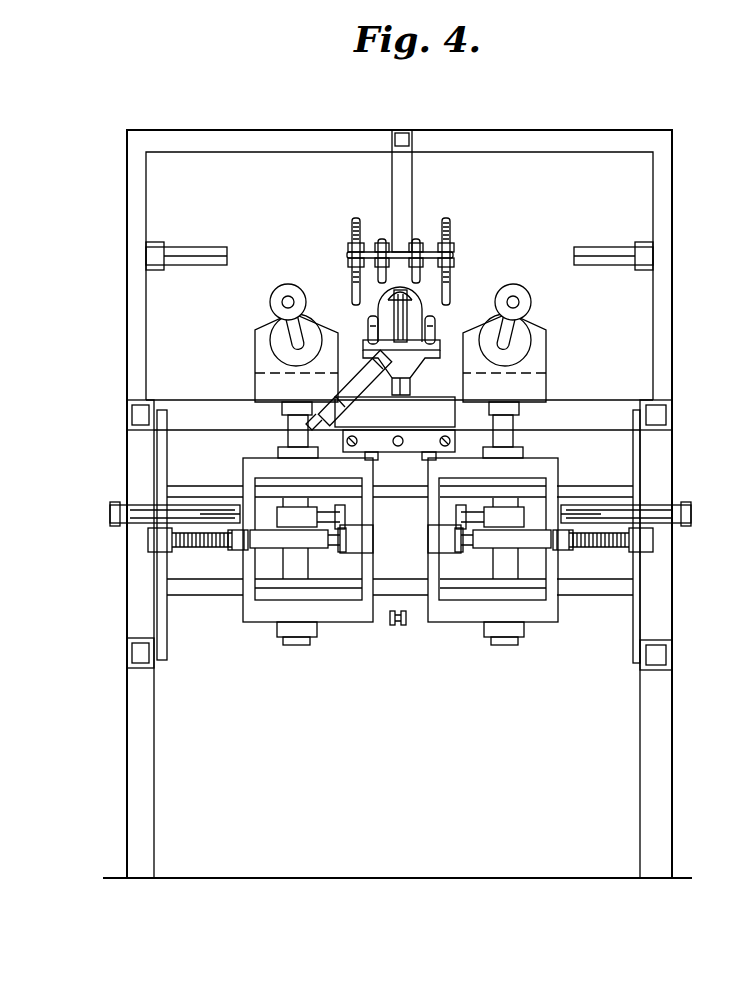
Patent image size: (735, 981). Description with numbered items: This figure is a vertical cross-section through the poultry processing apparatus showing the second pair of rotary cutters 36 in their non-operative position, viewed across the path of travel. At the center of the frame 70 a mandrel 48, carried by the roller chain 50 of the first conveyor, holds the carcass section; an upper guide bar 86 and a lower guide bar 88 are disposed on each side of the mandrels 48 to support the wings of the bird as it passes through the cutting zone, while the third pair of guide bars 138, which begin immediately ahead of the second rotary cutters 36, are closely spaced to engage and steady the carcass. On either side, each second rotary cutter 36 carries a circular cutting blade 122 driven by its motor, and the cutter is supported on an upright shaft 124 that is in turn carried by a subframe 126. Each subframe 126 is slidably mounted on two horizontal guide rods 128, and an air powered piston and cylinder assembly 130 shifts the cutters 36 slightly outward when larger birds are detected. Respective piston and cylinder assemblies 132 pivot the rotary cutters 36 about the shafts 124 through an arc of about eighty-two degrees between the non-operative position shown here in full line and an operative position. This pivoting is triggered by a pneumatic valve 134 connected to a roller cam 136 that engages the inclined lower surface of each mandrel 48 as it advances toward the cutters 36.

The second pair of rotary cutters 36 is at (287, 286).
The mandrel 48 is at (378, 300).
The roller chain 50 is at (412, 388).
The frame 70 is at (127, 745).
The upper guide bar 86 is at (446, 300).
The lower guide bar 88 is at (432, 326).
The circular cutting blade 122 is at (269, 299).
The upright shaft 124 is at (290, 440).
The subframe 126 is at (243, 610).
The horizontal guide rods 128 is at (205, 485).
The air powered piston and cylinder assembly 130 is at (272, 538).
The piston and cylinder assembly 132 is at (153, 507).
The pneumatic valve 134 is at (347, 397).
The roller cam 136 is at (345, 368).
The third pair of guide bars 138 is at (420, 283).